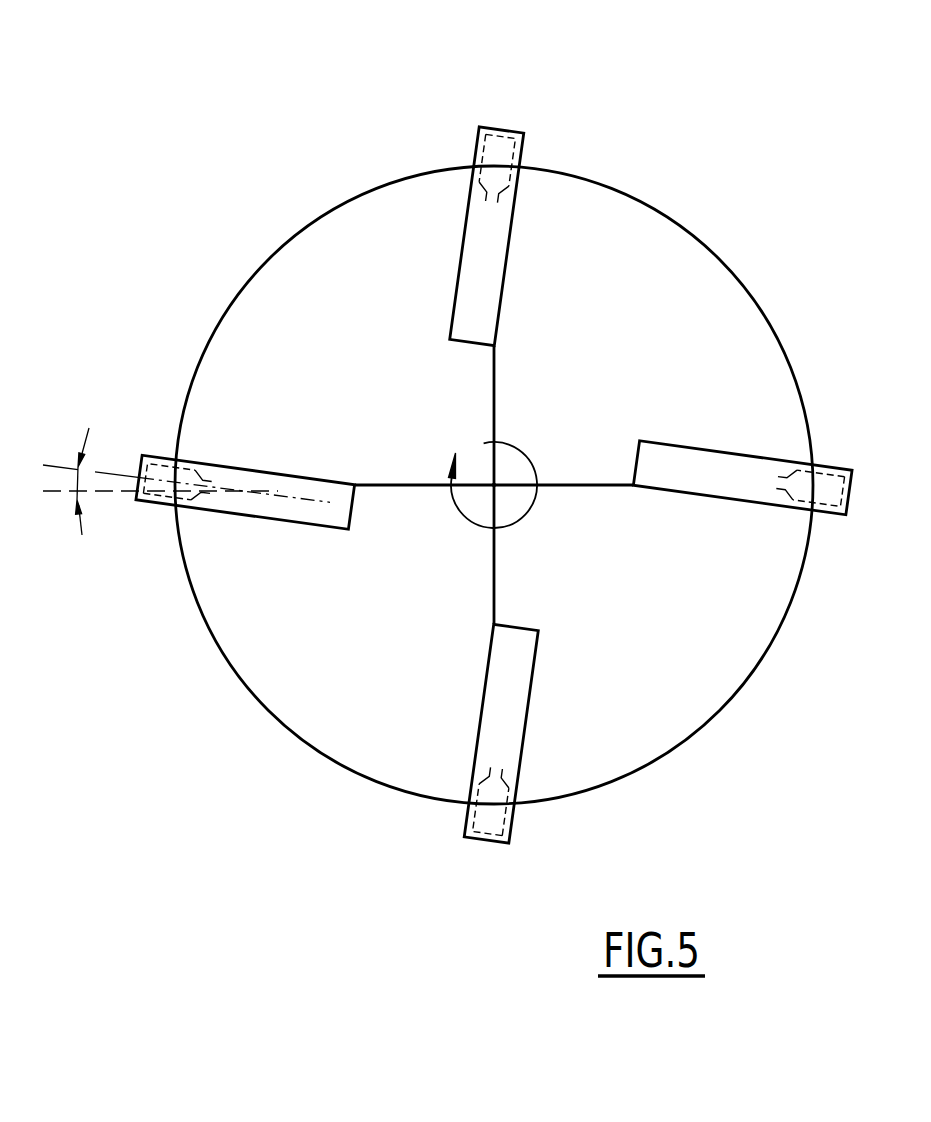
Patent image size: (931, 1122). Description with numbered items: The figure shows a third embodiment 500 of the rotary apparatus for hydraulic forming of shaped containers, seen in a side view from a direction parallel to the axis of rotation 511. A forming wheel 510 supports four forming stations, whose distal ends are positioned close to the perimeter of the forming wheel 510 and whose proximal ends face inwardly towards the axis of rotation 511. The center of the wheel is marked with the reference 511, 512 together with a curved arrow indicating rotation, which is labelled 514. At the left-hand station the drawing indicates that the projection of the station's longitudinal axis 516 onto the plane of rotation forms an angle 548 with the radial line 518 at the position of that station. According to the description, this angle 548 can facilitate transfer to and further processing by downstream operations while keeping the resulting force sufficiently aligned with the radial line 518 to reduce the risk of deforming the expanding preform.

The third embodiment of the rotary apparatus 500 is at (272, 176).
The forming wheel 510 is at (672, 288).
The axis of rotation 511 is at (548, 432).
The center of rotation 512 is at (498, 481).
The direction of rotation 514 is at (533, 508).
The longitudinal axis 516 is at (55, 465).
The radial line 518 is at (55, 492).
The angle 548 is at (85, 483).